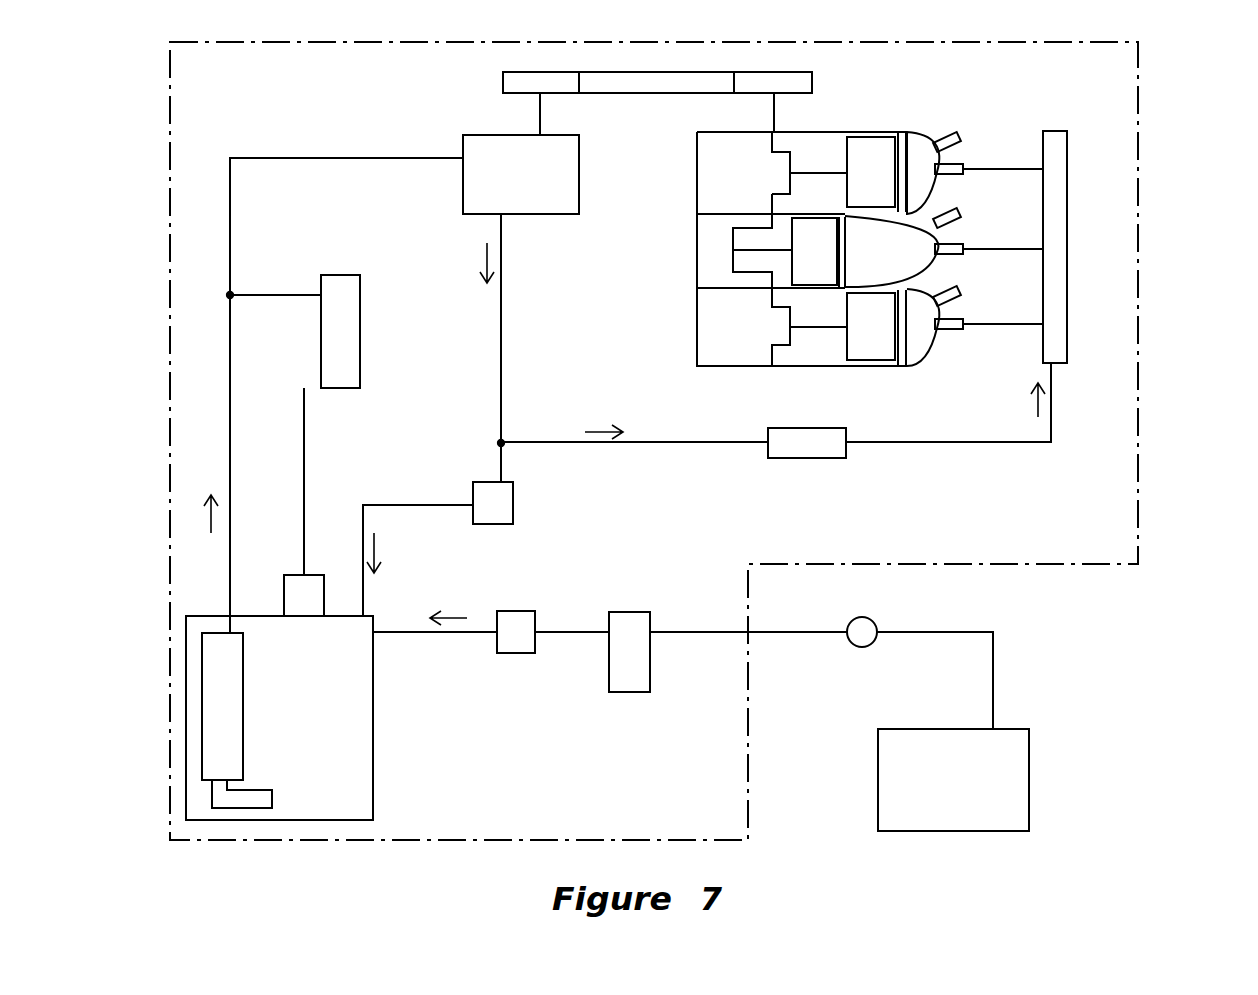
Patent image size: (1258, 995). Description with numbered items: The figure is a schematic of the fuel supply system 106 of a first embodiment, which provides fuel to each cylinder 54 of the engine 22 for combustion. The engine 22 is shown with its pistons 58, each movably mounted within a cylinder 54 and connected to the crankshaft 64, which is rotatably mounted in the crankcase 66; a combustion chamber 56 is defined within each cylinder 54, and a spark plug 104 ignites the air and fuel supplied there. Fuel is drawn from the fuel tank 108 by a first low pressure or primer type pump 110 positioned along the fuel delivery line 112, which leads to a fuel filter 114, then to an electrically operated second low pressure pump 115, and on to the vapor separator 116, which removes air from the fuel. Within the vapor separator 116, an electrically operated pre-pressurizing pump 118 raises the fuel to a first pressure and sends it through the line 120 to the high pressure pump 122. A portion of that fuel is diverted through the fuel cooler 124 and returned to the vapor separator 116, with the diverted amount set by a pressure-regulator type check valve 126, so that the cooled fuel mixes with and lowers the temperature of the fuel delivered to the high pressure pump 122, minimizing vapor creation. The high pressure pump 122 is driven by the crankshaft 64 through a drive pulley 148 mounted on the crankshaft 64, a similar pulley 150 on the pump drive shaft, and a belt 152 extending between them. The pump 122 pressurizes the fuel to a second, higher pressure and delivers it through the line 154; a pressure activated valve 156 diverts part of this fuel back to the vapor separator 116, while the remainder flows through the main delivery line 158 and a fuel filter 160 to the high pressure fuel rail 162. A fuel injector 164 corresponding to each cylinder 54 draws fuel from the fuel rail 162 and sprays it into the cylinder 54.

The engine 22 is at (836, 240).
The cylinder 54 is at (917, 140).
The combustion chamber 56 is at (918, 347).
The piston 58 is at (870, 345).
The crankshaft 64 is at (774, 123).
The crankcase 66 is at (722, 355).
The spark plug 104 is at (947, 135).
The fuel supply system 106 is at (1143, 257).
The fuel tank 108 is at (1020, 761).
The first low pressure pump 110 is at (863, 623).
The fuel delivery line 112 is at (995, 650).
The fuel filter 114 is at (635, 692).
The second low pressure pump 115 is at (515, 653).
The vapor separator 116 is at (363, 753).
The pre-pressurizing pump 118 is at (237, 698).
The line 120 is at (230, 377).
The high pressure pump 122 is at (537, 207).
The fuel cooler 124 is at (348, 317).
The pressure-regulator type check valve 126 is at (297, 587).
The drive pulley 148 is at (807, 82).
The pulley 150 is at (503, 85).
The belt 152 is at (647, 93).
The line 154 is at (502, 345).
The pressure activated valve 156 is at (502, 498).
The main delivery line 158 is at (647, 442).
The fuel filter 160 is at (800, 447).
The high pressure fuel rail 162 is at (1062, 188).
The fuel injector 164 is at (943, 237).